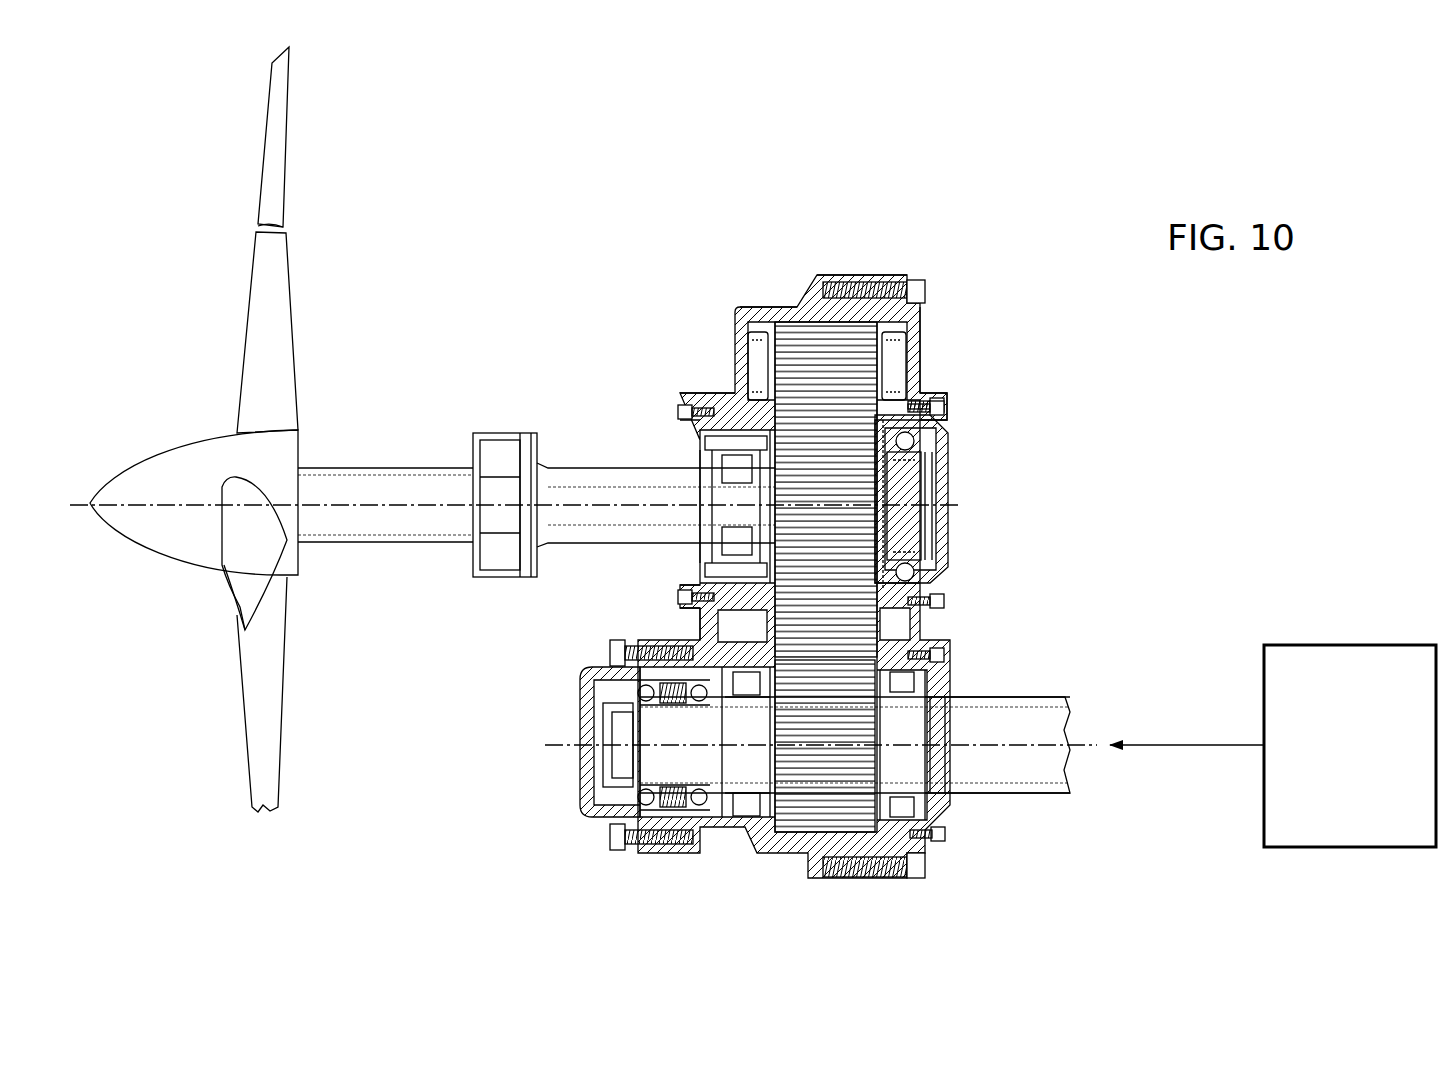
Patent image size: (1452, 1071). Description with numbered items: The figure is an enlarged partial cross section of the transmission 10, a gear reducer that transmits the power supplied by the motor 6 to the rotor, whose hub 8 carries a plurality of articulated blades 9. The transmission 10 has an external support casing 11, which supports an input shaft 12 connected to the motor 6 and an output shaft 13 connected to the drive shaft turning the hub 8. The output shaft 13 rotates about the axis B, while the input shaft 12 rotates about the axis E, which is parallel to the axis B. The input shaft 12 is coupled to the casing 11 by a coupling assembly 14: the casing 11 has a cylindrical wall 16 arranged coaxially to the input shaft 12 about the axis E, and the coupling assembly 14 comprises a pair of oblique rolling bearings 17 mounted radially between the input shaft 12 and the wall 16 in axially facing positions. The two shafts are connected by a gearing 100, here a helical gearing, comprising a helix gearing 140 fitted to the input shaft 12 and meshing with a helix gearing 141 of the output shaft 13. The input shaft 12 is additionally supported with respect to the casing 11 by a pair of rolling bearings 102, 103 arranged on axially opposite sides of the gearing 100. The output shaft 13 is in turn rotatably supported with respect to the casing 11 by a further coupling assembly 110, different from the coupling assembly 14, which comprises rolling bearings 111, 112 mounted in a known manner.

The motor 6 is at (1282, 688).
The hub 8 is at (152, 468).
The articulated blades 9 is at (267, 337).
The transmission 10 is at (966, 400).
The external support casing 11 is at (755, 245).
The input shaft 12 is at (1023, 696).
The output shaft 13 is at (593, 478).
The coupling assembly 14 is at (667, 864).
The cylindrical wall 16 is at (793, 308).
The oblique rolling bearings 17 is at (621, 812).
The gearing 100 is at (878, 274).
The rolling bearing 102 is at (712, 653).
The rolling bearing 103 is at (949, 657).
The coupling assembly 110 is at (947, 465).
The rolling bearing 111 is at (715, 390).
The rolling bearing 112 is at (932, 384).
The helix gearing 140 is at (838, 790).
The helix gearing 141 is at (836, 357).
The axis B is at (390, 507).
The axis E is at (1032, 770).